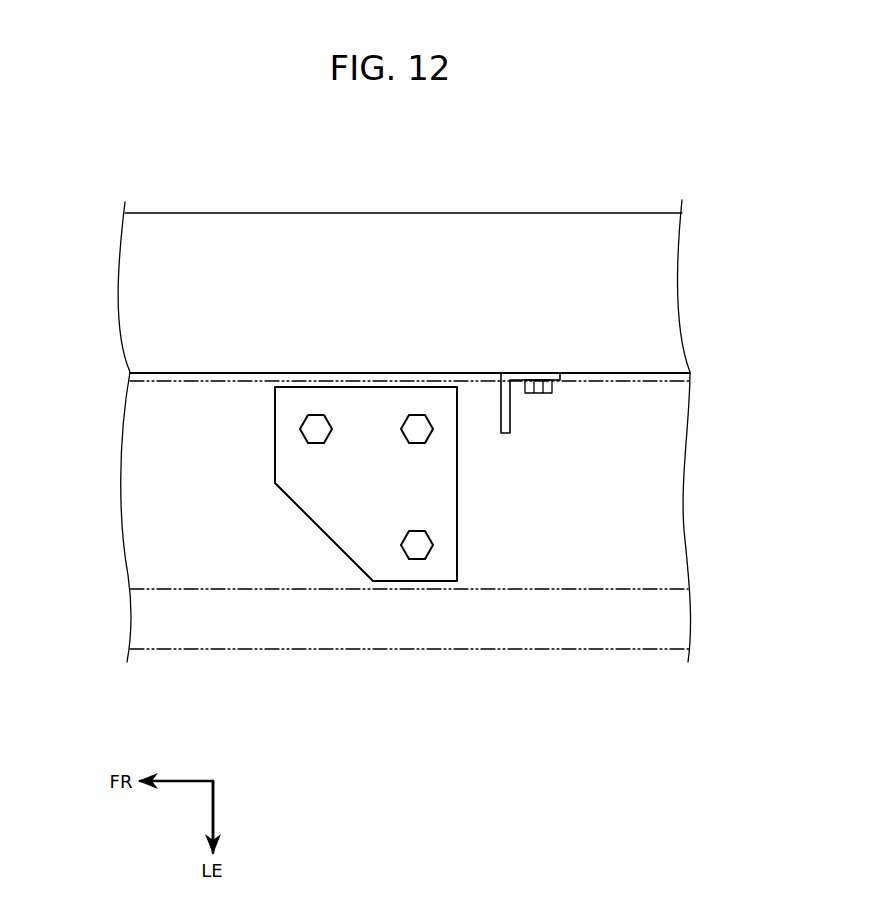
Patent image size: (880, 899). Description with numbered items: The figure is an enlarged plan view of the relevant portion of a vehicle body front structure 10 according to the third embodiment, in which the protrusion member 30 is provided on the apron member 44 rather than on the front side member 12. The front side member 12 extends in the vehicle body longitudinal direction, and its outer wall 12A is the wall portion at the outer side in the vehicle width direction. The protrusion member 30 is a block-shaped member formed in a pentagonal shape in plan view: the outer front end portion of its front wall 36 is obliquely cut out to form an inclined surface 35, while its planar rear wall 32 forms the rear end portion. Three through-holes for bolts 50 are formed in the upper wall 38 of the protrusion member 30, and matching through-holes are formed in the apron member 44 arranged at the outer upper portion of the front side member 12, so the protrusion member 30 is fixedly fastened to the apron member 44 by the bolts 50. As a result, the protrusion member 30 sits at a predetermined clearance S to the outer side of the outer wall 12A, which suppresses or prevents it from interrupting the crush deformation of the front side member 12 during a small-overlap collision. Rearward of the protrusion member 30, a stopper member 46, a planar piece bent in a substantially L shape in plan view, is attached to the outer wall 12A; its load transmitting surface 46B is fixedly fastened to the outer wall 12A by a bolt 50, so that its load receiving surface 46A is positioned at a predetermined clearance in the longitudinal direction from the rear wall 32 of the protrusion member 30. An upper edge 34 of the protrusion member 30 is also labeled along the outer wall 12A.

The vehicle body 10 is at (326, 688).
The front side member 12 is at (362, 211).
The outer wall 12A is at (174, 376).
The clearance S is at (127, 372).
The protrusion member 30 is at (366, 503).
The rear wall 32 is at (458, 565).
The bracket upper edge 34 is at (368, 385).
The inclined surface 35 is at (319, 531).
The front wall 36 is at (274, 433).
The upper wall 38 is at (432, 491).
The apron member 44 is at (532, 627).
The stopper member 46 is at (549, 390).
The load receiving surface 46A is at (506, 436).
The load transmitting surface 46B is at (560, 379).
The bolt 50 is at (318, 427).